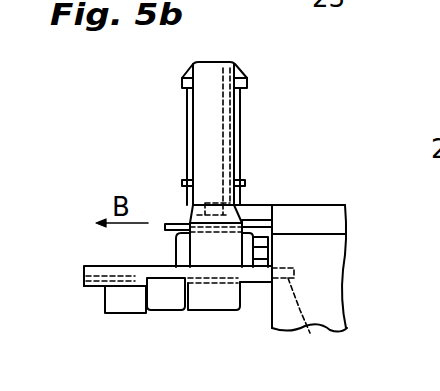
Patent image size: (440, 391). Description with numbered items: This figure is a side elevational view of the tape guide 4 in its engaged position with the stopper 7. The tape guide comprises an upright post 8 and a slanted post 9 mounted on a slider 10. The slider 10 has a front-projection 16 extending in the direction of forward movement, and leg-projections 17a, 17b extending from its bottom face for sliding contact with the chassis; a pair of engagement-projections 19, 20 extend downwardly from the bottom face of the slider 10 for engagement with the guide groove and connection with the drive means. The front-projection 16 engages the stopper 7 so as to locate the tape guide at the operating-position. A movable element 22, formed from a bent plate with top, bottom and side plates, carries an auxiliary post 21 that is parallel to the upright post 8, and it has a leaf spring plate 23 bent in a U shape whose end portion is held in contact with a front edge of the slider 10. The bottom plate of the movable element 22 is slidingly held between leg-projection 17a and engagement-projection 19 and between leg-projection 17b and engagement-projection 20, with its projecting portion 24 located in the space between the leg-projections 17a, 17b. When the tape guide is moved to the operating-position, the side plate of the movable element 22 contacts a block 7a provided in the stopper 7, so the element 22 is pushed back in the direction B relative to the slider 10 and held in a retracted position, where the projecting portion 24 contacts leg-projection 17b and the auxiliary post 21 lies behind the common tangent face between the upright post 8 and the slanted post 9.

The tape guide 4 is at (83, 250).
The stopper 7 is at (272, 207).
The block 7a is at (332, 250).
The upright post 8 is at (188, 120).
The slanted post 9 is at (214, 63).
The slider 10 is at (148, 267).
The front-projection 16 is at (310, 333).
The leg-projection 17a is at (233, 285).
The leg-projection 17b is at (88, 288).
The engagement-projection 19 is at (212, 302).
The engagement-projection 20 is at (121, 305).
The auxiliary post 21 is at (228, 73).
The movable element 22 is at (273, 231).
The leaf spring plate 23 is at (268, 253).
The projecting portion 24 is at (147, 290).